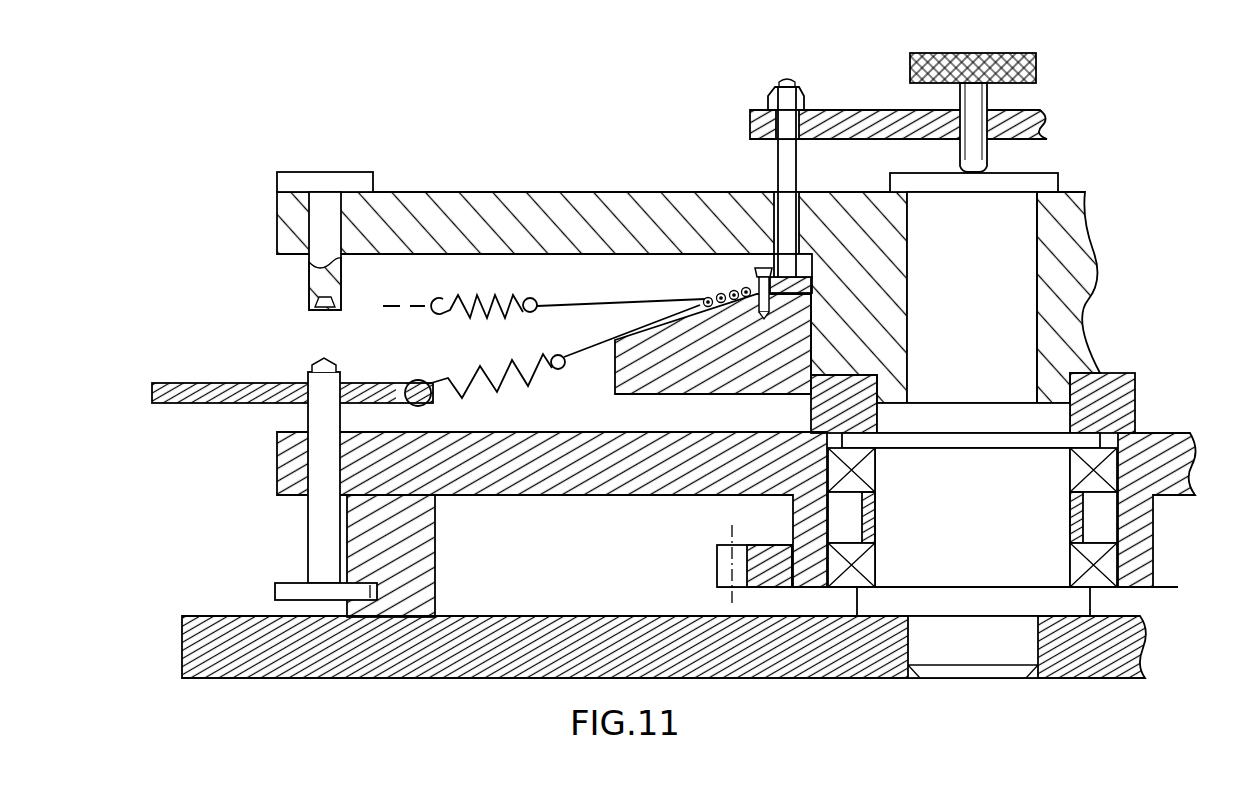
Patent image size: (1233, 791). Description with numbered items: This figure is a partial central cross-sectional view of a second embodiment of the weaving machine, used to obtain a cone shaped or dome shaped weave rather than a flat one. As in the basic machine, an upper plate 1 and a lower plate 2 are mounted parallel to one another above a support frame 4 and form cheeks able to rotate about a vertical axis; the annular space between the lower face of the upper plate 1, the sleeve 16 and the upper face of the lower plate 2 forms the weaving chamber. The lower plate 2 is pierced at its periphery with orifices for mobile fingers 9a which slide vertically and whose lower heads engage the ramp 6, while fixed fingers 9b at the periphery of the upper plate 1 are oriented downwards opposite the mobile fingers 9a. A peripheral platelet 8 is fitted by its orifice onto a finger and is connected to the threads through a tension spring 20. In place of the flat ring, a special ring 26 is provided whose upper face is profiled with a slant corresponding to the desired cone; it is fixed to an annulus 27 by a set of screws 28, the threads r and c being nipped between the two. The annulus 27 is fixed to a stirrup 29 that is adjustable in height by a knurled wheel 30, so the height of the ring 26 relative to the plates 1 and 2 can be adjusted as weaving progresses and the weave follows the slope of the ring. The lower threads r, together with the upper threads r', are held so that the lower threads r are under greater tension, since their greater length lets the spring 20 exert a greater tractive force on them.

The upper plate 1 is at (735, 215).
The lower plate 2 is at (668, 480).
The support frame 4 is at (773, 660).
The ramp 6 is at (379, 594).
The platelet 8 is at (245, 385).
The mobile finger 9a is at (318, 521).
The fixed finger 9b is at (300, 182).
The sleeve 16 is at (1040, 297).
The tension spring 20 is at (456, 378).
The special ring 26 is at (697, 368).
The annulus 27 is at (803, 283).
The screw 28 is at (763, 258).
The stirrup 29 is at (848, 120).
The knurled wheel 30 is at (1036, 75).
The thread c is at (700, 302).
The lower thread r is at (632, 361).
The rod r' is at (614, 204).